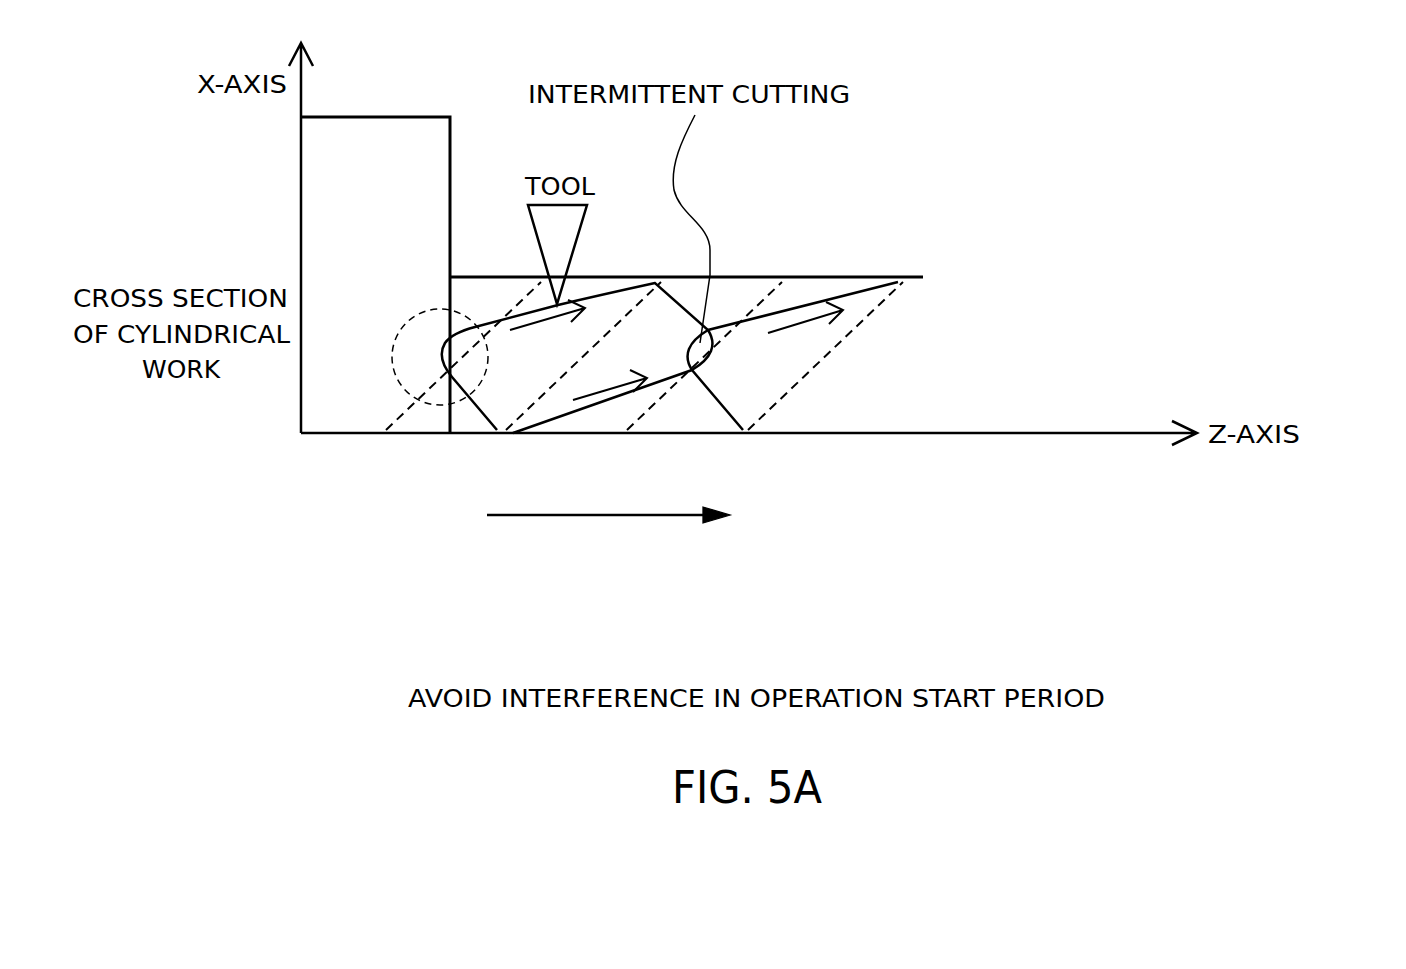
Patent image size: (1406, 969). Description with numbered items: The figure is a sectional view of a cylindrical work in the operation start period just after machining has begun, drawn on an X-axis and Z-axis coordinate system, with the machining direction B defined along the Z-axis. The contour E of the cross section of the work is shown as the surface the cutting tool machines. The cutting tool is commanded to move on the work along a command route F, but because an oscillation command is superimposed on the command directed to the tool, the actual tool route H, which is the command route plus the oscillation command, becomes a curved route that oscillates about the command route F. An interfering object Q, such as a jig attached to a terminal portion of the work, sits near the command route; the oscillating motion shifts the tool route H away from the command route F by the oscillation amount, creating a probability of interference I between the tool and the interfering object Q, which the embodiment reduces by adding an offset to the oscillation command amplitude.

The interfering object Q is at (368, 117).
The interference I is at (408, 320).
The contour of the cross section of the work E is at (883, 277).
The command route F is at (750, 313).
The tool route H is at (722, 405).
The machining direction B is at (514, 519).